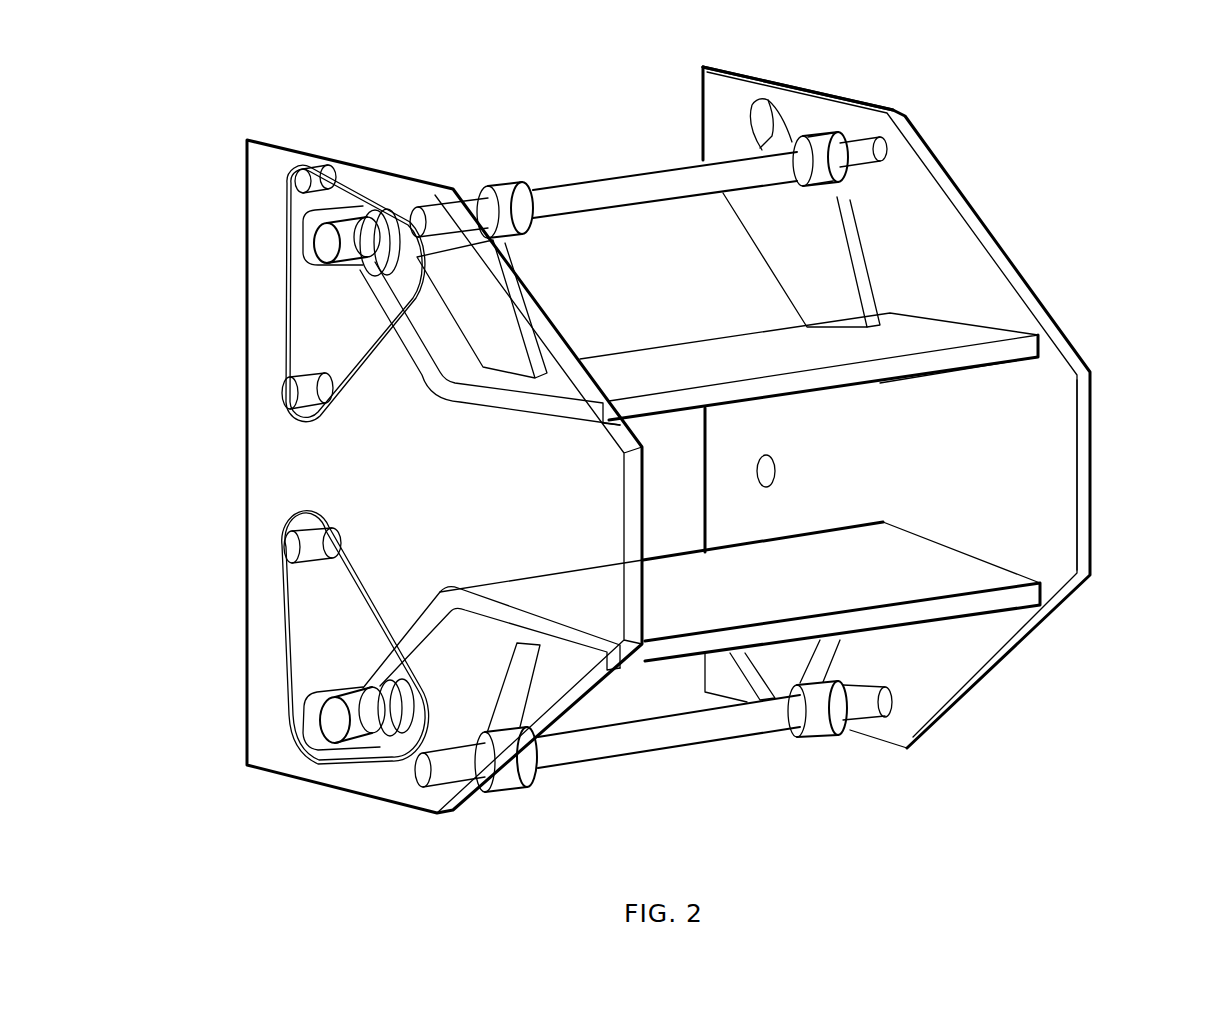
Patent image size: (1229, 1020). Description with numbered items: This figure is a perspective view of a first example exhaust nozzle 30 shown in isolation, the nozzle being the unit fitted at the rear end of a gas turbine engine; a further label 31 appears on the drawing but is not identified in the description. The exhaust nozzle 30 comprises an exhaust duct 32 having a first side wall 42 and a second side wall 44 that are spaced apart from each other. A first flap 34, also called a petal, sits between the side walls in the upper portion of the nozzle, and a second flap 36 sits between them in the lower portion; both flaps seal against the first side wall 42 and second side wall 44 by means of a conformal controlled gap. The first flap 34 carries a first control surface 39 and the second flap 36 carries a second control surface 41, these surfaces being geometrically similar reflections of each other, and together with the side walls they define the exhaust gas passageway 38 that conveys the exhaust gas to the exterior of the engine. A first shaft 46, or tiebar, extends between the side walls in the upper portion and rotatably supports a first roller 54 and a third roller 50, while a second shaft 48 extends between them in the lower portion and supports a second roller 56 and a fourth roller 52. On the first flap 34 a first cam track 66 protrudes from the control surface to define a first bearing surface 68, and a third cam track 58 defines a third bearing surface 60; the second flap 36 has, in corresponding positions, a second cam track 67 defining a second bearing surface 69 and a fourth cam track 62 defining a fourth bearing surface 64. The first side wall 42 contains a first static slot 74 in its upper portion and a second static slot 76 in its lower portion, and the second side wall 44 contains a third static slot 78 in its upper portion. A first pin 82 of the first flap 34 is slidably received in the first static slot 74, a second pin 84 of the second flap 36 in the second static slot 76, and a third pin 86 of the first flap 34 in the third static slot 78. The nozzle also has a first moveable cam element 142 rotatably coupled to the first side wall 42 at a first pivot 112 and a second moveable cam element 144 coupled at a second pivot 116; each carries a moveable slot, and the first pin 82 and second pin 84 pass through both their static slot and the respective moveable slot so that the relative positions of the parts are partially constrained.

The exhaust nozzle 30 is at (1128, 95).
The frame 31 is at (144, 99).
The exhaust duct 32 is at (412, 503).
The first flap 34 is at (920, 337).
The second flap 36 is at (940, 409).
The exhaust gas passageway 38 is at (686, 503).
The first control surface 39 is at (950, 376).
The second control surface 41 is at (960, 566).
The first side wall 42 is at (258, 470).
The second side wall 44 is at (1082, 462).
The first shaft 46 is at (652, 183).
The second shaft 48 is at (697, 730).
The third roller 50 is at (825, 130).
The fourth roller 52 is at (830, 723).
The first roller 54 is at (503, 190).
The second roller 56 is at (517, 775).
The third cam track 58 is at (790, 227).
The third bearing surface 60 is at (843, 273).
The fourth cam track 62 is at (775, 670).
The fourth bearing surface 64 is at (823, 657).
The first cam track 66 is at (490, 317).
The second cam track 67 is at (478, 657).
The first bearing surface 68 is at (510, 247).
The second bearing surface 69 is at (523, 683).
The first static slot 74 is at (315, 180).
The second static slot 76 is at (297, 753).
The third static slot 78 is at (768, 118).
The first pin 82 is at (305, 212).
The second pin 84 is at (337, 727).
The third pin 86 is at (823, 153).
The first pivot 112 is at (287, 390).
The second pivot 116 is at (288, 548).
The first moveable cam element 142 is at (307, 333).
The second moveable cam element 144 is at (310, 643).